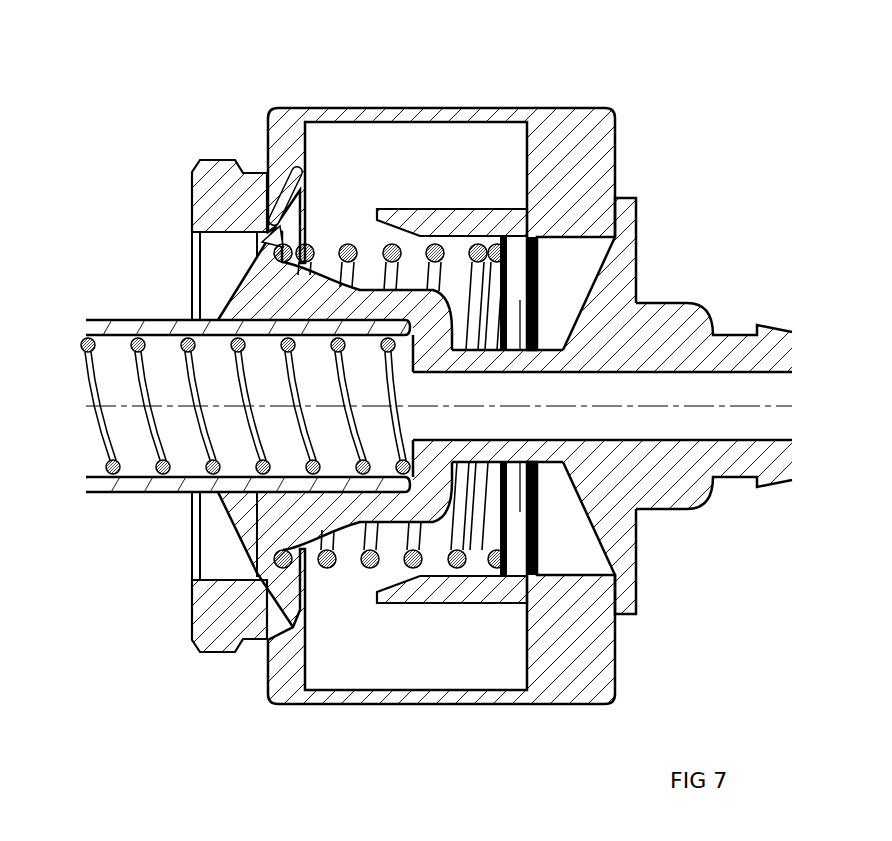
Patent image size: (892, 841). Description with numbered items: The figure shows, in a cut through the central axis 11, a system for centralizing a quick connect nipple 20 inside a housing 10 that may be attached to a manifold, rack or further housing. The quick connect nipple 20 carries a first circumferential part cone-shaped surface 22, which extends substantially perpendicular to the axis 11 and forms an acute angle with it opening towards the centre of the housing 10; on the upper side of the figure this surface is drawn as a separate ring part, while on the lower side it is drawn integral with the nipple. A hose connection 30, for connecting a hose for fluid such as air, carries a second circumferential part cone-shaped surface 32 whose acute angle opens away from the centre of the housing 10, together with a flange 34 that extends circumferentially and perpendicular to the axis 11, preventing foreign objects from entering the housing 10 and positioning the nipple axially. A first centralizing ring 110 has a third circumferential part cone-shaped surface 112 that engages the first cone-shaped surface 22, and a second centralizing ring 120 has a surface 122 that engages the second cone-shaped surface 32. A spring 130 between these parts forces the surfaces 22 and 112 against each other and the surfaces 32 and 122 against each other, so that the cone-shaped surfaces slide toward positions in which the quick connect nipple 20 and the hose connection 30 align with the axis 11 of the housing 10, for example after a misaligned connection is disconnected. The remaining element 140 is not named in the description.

The housing 10 is at (343, 115).
The axis 11 is at (738, 407).
The quick connect nipple 20 is at (135, 328).
The first circumferential part cone-shaped surface 22 is at (253, 262).
The hose connection 30 is at (663, 497).
The second circumferential part cone-shaped surface 32 is at (590, 283).
The flange 34 is at (612, 577).
The first centralizing ring 110 is at (220, 203).
The third circumferential part cone-shaped surface 112 is at (283, 207).
The second centralizing ring 120 is at (562, 218).
The surface 122 is at (617, 237).
The spring 130 is at (320, 558).
The spacer ring 140 is at (430, 593).